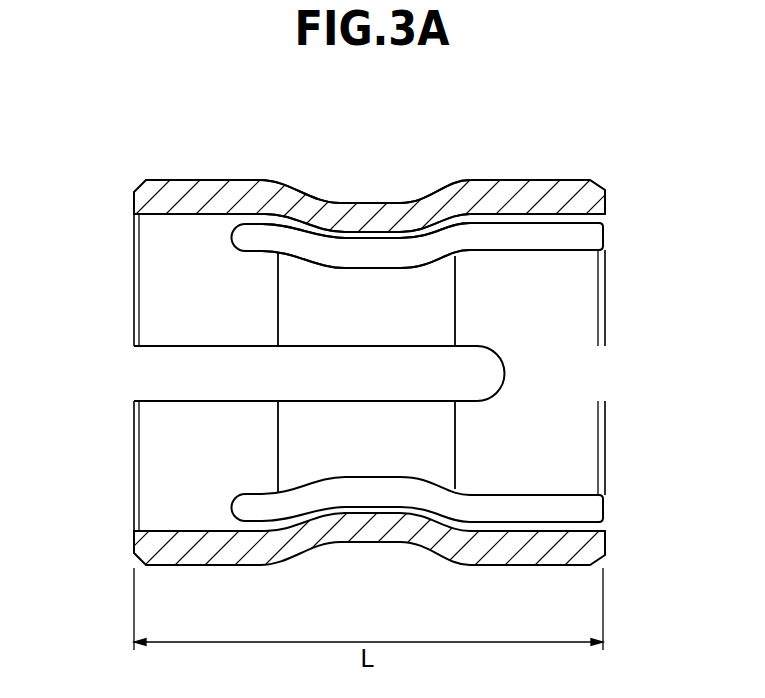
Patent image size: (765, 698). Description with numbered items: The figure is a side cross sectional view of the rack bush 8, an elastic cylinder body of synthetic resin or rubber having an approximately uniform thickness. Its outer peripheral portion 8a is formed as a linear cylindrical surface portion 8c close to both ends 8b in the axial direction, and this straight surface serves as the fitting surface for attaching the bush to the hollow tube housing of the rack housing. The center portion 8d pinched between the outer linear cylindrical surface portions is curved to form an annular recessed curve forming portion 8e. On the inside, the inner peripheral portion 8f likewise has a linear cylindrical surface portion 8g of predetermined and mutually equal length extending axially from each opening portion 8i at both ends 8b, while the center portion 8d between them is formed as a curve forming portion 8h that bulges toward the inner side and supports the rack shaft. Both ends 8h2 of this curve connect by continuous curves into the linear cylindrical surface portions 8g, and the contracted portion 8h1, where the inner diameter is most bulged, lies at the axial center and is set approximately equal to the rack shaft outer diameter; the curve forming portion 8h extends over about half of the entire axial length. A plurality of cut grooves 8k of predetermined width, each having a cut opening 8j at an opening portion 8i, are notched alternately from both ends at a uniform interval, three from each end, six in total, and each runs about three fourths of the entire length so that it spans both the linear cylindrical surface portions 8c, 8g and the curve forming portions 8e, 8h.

The rack bush 8 is at (480, 132).
The outer peripheral portion 8a is at (587, 175).
The ends 8b is at (133, 282).
The linear cylindrical surface portion 8c is at (199, 180).
The center portion 8d is at (378, 210).
The annular recessed curve forming portion 8e is at (351, 203).
The inner peripheral portion 8f is at (553, 521).
The linear cylindrical surface portion 8g is at (185, 214).
The curve forming portion 8h is at (340, 250).
The contracted portion 8h1 is at (375, 262).
The ends of curve forming portion 8h2 is at (254, 228).
The opening portion 8i is at (148, 325).
The cut opening 8j is at (150, 385).
The cut groove 8k is at (302, 252).